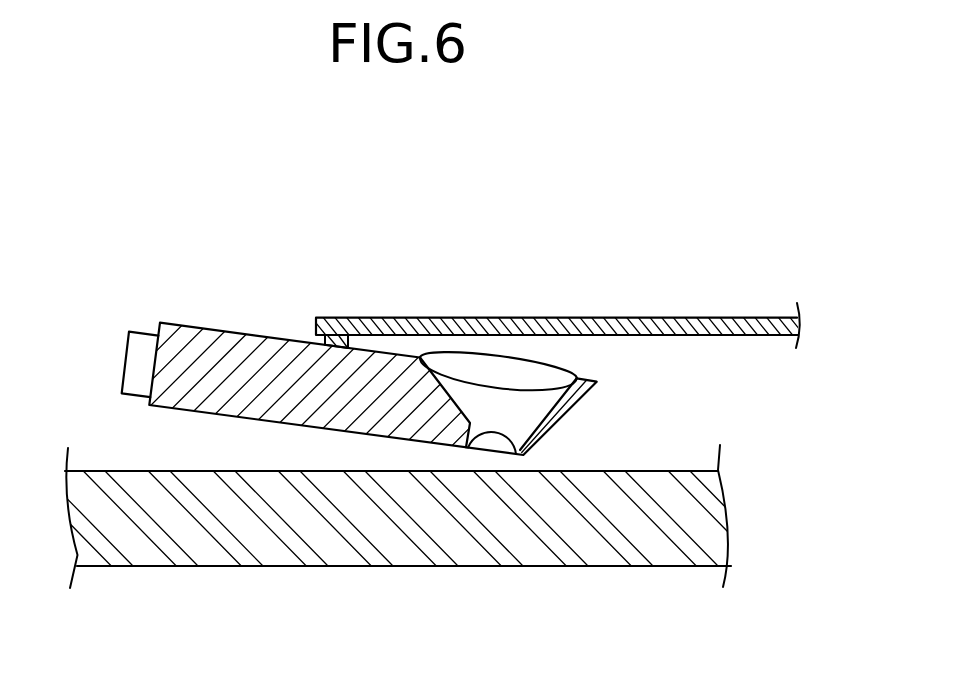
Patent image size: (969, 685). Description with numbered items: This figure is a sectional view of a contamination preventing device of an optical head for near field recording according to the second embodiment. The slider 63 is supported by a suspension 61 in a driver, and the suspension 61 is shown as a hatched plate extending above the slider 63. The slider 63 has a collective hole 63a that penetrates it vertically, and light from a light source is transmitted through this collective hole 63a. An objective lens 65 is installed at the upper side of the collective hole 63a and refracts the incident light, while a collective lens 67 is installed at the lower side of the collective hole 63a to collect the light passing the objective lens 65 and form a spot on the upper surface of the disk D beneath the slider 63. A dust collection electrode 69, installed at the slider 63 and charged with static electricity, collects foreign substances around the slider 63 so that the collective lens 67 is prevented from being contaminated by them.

The suspension 61 is at (390, 317).
The slider 63 is at (270, 348).
The collective hole 63a is at (527, 399).
The objective lens 65 is at (547, 369).
The collective lens 67 is at (510, 427).
The dust collection electrode 69 is at (143, 347).
The disk D is at (662, 537).